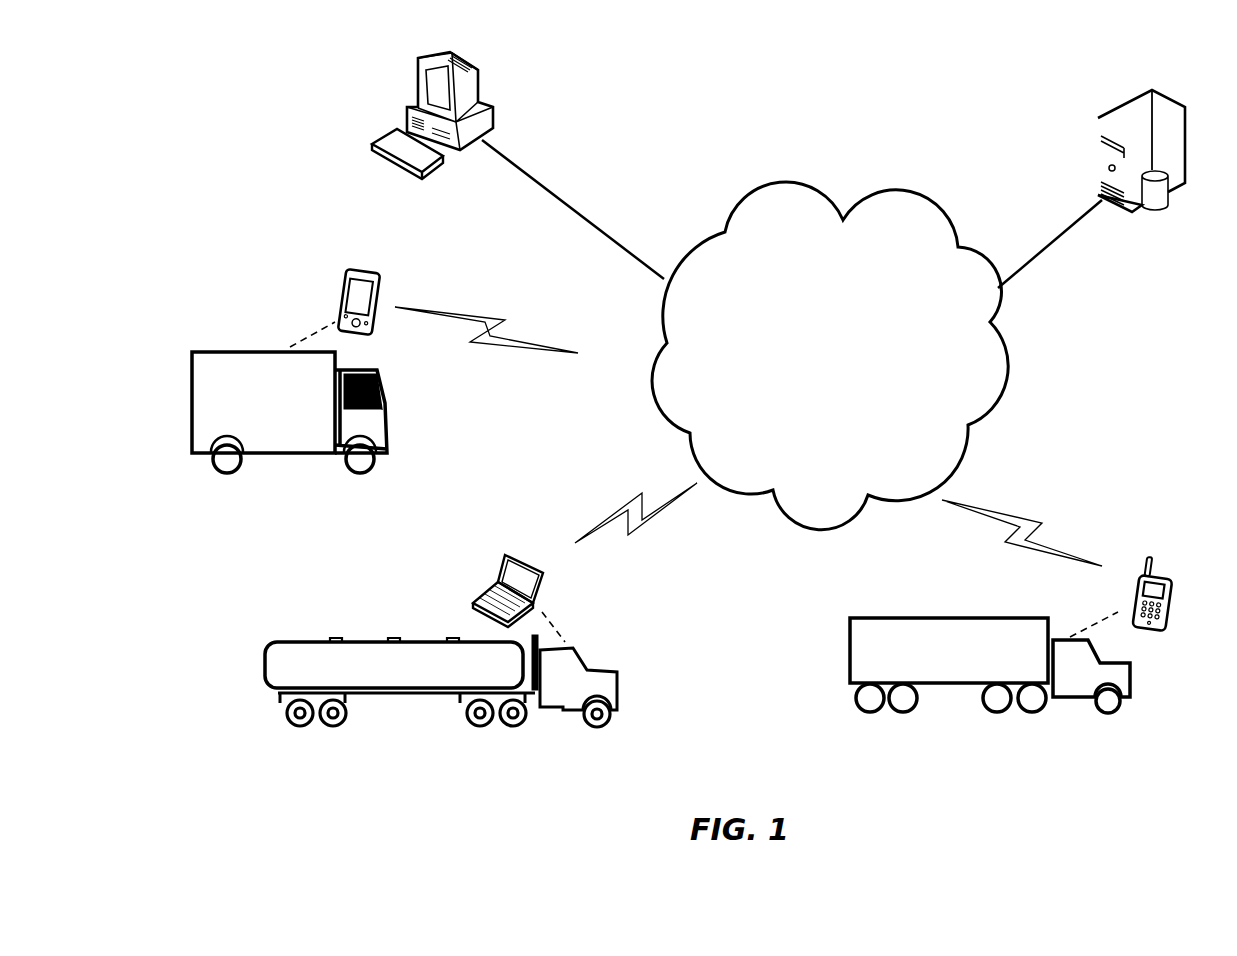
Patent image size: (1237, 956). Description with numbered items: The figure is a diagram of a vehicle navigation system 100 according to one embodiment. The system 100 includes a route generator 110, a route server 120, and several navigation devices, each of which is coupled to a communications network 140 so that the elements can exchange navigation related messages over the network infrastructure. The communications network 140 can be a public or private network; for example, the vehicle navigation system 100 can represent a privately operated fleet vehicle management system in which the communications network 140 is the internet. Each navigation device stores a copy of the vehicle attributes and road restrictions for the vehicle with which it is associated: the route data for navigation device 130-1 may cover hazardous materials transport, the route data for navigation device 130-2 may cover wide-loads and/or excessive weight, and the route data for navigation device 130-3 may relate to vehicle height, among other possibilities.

The vehicle navigation system 100 is at (943, 63).
The route generator 110 is at (476, 68).
The route server 120 is at (1146, 102).
The navigation device 130-1 is at (481, 592).
The navigation device 130-2 is at (1158, 574).
The navigation device 130-3 is at (339, 272).
The communications network 140 is at (1002, 340).